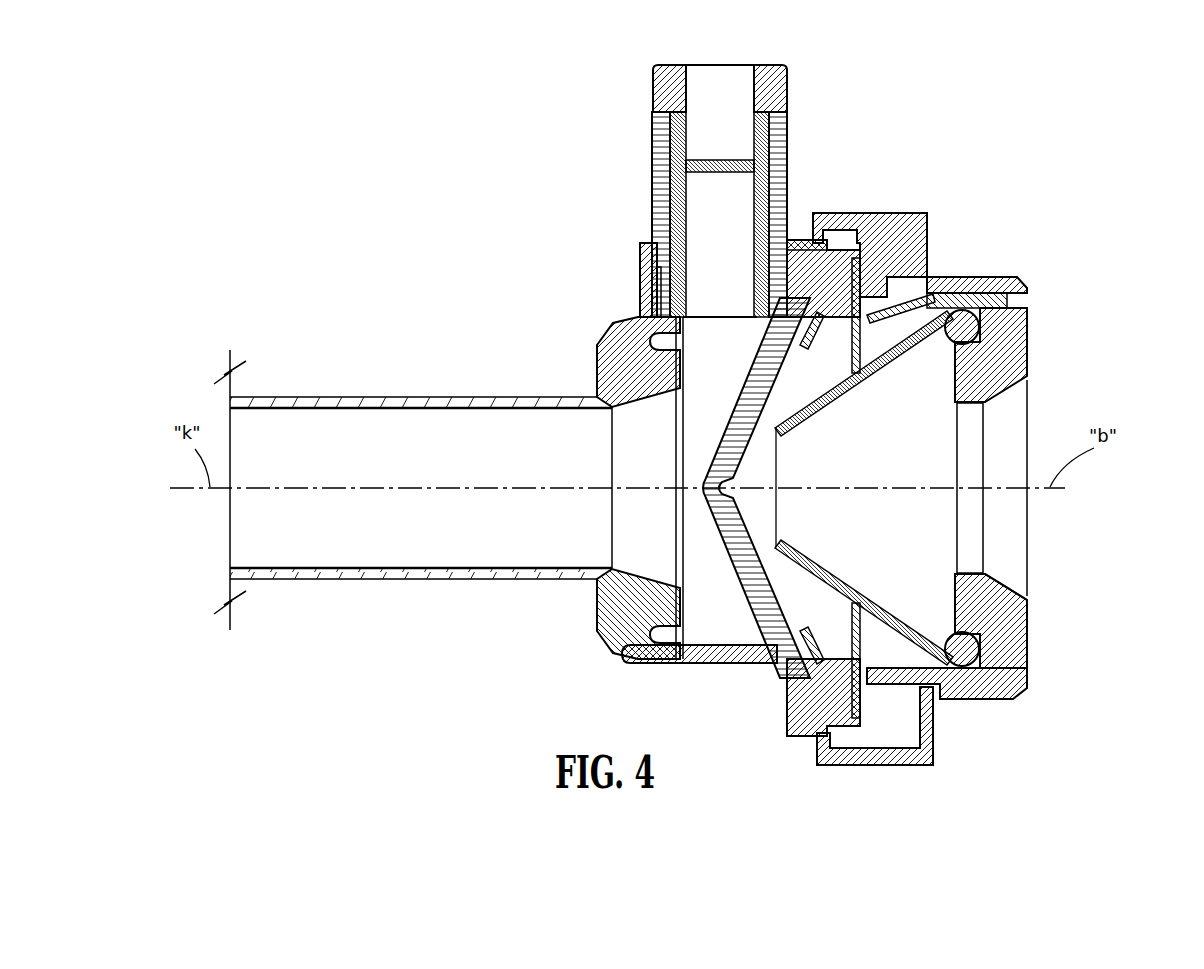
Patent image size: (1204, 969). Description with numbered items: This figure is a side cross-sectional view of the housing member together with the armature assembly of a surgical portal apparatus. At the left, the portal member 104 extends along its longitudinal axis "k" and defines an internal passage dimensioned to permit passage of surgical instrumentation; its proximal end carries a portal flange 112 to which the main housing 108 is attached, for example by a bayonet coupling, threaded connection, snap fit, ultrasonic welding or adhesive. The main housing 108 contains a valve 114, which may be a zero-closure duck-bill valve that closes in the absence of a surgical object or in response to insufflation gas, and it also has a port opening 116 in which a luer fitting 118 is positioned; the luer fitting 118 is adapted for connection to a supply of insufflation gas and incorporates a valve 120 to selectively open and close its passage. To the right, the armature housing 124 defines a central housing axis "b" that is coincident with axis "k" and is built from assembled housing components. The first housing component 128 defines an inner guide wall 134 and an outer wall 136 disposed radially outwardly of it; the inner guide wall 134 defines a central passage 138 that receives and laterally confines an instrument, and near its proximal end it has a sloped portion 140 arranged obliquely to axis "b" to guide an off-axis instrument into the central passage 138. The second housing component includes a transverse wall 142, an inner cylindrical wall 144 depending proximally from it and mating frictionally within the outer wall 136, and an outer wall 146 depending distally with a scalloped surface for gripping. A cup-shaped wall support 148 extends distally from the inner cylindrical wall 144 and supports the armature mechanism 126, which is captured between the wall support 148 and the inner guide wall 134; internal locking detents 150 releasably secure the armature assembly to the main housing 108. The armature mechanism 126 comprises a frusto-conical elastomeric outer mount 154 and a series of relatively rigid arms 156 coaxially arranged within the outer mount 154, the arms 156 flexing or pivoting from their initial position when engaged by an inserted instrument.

The portal member 104 is at (402, 395).
The main housing 108 is at (640, 326).
The portal flange 112 is at (606, 604).
The valve 114 is at (645, 290).
The port opening 116 is at (760, 397).
The luer fitting 118 is at (785, 160).
The valve 120 is at (778, 72).
The armature housing 124 is at (988, 283).
The armature mechanism 126 is at (960, 540).
The first housing component 128 is at (1020, 370).
The inner guide wall 134 is at (800, 228).
The outer wall 136 is at (992, 285).
The central passage 138 is at (977, 542).
The sloped portion 140 is at (987, 583).
The transverse wall 142 is at (935, 262).
The inner cylindrical wall 144 is at (1013, 700).
The outer wall 146 is at (857, 762).
The wall support 148 is at (979, 260).
The internal locking detents 150 is at (857, 640).
The outer mount 154 is at (835, 415).
The arms 156 is at (960, 395).